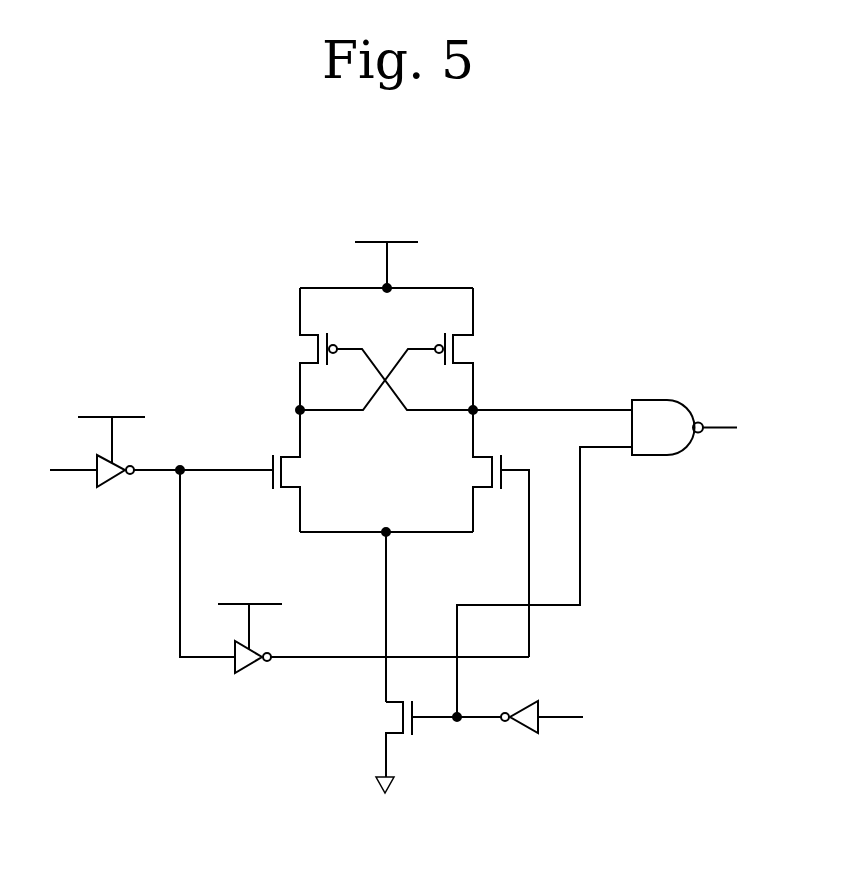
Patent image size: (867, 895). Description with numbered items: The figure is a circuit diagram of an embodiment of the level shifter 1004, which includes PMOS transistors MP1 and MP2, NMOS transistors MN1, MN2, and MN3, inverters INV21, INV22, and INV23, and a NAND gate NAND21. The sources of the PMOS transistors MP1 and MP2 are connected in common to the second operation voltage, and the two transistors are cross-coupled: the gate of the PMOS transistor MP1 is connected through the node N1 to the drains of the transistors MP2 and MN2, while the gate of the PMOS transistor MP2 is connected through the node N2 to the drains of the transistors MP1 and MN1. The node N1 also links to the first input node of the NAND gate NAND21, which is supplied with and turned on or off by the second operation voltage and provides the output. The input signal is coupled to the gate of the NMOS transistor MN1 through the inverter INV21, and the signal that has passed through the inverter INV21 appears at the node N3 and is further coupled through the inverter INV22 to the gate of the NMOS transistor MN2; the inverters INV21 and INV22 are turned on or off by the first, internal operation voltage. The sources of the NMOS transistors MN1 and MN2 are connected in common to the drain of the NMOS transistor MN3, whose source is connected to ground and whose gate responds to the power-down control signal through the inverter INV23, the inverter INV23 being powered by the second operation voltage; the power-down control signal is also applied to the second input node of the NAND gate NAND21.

The level shifter 1004 is at (197, 233).
The PMOS transistor MP1 is at (365, 349).
The PMOS transistor MP2 is at (406, 349).
The NMOS transistor MN1 is at (233, 471).
The NMOS transistor MN2 is at (479, 533).
The NMOS transistor MN3 is at (487, 620).
The node N1 is at (550, 398).
The node N2 is at (313, 398).
The node N3 is at (201, 550).
The inverter INV21 is at (113, 487).
The inverter INV22 is at (250, 673).
The inverter INV23 is at (522, 733).
The NAND gate NAND21 is at (667, 400).